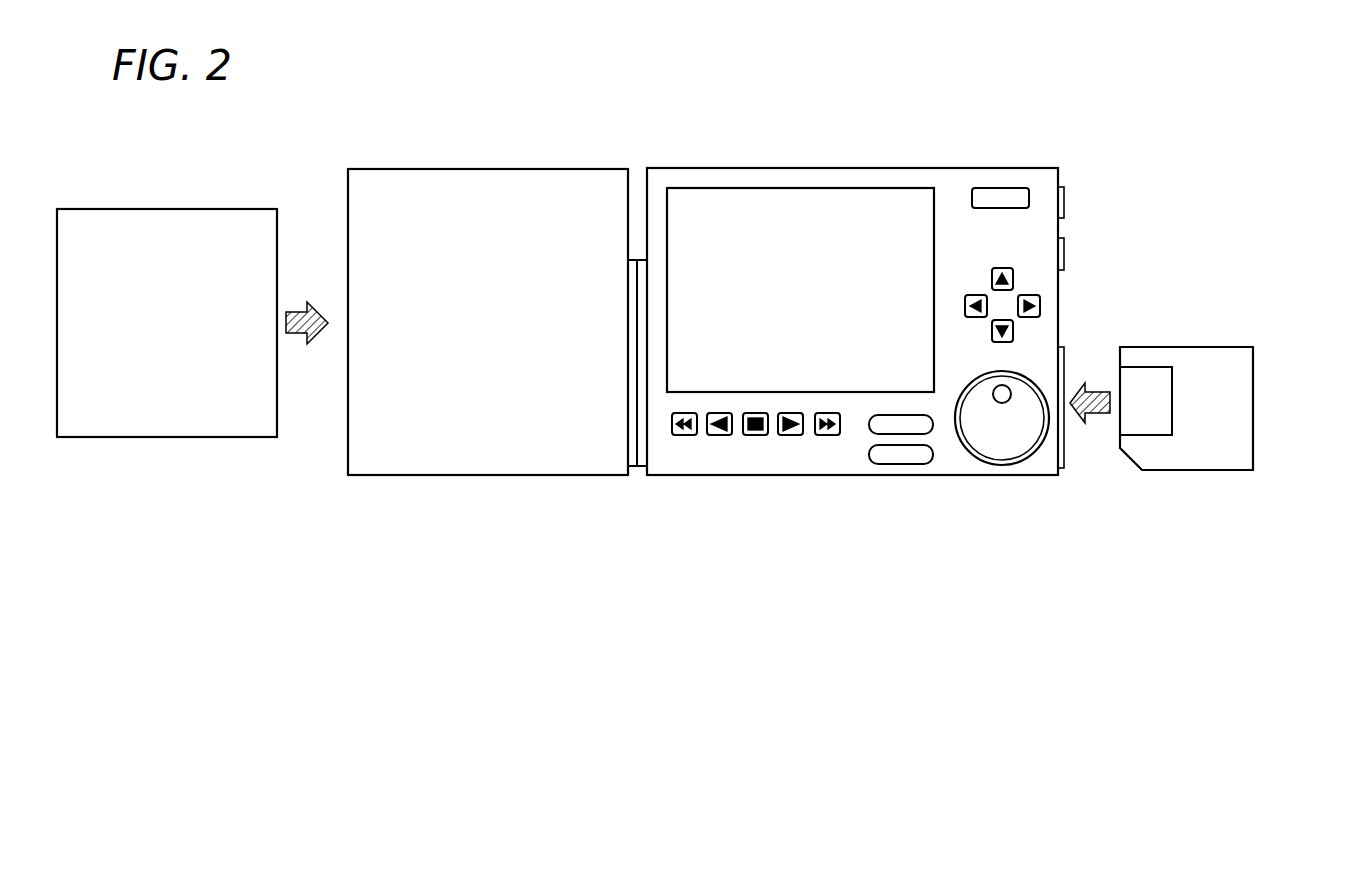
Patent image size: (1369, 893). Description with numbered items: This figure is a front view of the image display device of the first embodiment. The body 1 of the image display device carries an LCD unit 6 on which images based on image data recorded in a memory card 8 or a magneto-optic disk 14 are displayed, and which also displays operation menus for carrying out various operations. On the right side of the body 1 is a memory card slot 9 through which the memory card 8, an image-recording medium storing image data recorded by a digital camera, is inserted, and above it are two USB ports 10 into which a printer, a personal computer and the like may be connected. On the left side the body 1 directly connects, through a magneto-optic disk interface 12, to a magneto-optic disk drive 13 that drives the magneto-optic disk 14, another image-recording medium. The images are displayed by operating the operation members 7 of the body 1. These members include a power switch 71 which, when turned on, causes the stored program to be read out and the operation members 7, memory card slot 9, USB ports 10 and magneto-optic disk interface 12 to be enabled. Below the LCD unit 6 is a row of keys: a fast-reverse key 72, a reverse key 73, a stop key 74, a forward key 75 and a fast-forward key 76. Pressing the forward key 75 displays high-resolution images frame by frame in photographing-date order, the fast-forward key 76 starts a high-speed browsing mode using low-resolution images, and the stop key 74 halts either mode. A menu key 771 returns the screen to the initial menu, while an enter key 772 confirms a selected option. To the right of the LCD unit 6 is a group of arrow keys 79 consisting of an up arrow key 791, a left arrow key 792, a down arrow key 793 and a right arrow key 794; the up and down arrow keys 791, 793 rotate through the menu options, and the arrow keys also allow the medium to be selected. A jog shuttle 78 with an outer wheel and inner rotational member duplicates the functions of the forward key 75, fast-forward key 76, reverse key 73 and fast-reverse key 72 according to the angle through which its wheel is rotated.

The body 1 is at (720, 172).
The LCD unit 6 is at (722, 244).
The operation members 7 is at (840, 506).
The memory card 8 is at (1201, 347).
The memory card slot 9 is at (1065, 455).
The USB ports 10 is at (1066, 252).
The magneto-optic disk interface 12 is at (636, 470).
The magneto-optic disk drive 13 is at (448, 175).
The magneto-optic disk 14 is at (200, 217).
The power switch 71 is at (992, 188).
The fast-reverse key 72 is at (684, 437).
The reverse key 73 is at (720, 437).
The stop key 74 is at (756, 437).
The forward key 75 is at (790, 437).
The fast-forward key 76 is at (828, 473).
The jog shuttle 78 is at (981, 378).
The arrow keys 79 is at (984, 261).
The menu key 771 is at (876, 415).
The enter key 772 is at (920, 465).
The up arrow key 791 is at (1014, 276).
The left arrow key 792 is at (964, 305).
The down arrow key 793 is at (1014, 331).
The right arrow key 794 is at (1041, 305).